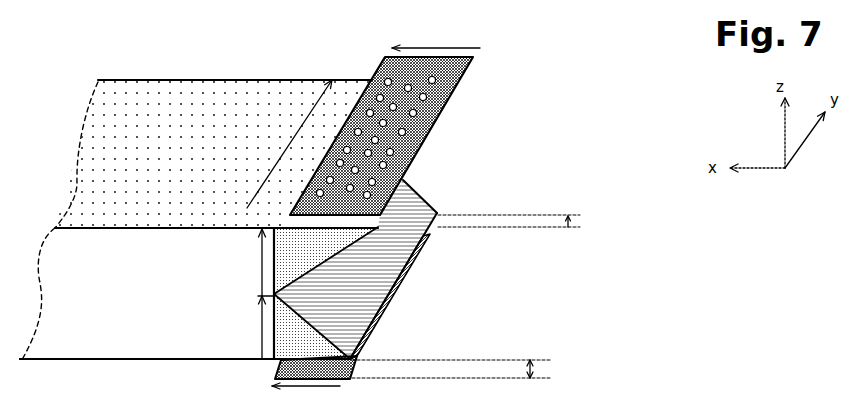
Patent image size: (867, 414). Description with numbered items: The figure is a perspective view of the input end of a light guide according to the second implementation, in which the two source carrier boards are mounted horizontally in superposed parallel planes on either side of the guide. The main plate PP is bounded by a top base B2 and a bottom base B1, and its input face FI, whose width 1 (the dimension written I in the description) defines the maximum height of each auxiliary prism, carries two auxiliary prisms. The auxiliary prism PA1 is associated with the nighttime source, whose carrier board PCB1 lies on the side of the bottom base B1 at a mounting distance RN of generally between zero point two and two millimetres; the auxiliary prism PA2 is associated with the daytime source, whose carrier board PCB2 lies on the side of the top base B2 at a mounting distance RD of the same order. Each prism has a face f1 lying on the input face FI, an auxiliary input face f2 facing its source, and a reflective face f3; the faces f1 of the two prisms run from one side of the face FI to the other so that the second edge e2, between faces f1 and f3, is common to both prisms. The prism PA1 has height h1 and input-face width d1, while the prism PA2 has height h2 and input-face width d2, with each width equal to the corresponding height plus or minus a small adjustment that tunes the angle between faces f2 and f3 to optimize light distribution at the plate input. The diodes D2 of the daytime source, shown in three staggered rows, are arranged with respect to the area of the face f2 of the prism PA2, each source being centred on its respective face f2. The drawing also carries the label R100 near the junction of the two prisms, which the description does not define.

The main plate PP is at (80, 87).
The top base B2 is at (213, 154).
The width of the input face 1 is at (289, 144).
The auxiliary input face f2 is at (307, 222).
The carrier board PCB2 is at (386, 58).
The width of input face f2 of prism PA2 d2 is at (436, 40).
The diodes of the daytime source D2 is at (422, 140).
The edge region R100 is at (447, 195).
The mounting distance of the daytime source RD is at (517, 228).
The auxiliary prism PA1 is at (438, 216).
The lateral face f3 is at (371, 297).
The lateral face f1 is at (326, 293).
The auxiliary prism PA2 is at (316, 274).
The height of prism PA2 h2 is at (251, 262).
The height of prism PA1 h1 is at (256, 327).
The second edge e2 is at (273, 296).
The bottom base B1 is at (145, 362).
The input face FI is at (199, 314).
The width of input face f2 of prism PA1 d1 is at (306, 397).
The carrier board PCB1 is at (352, 380).
The mounting distance of the nighttime source RN is at (463, 370).